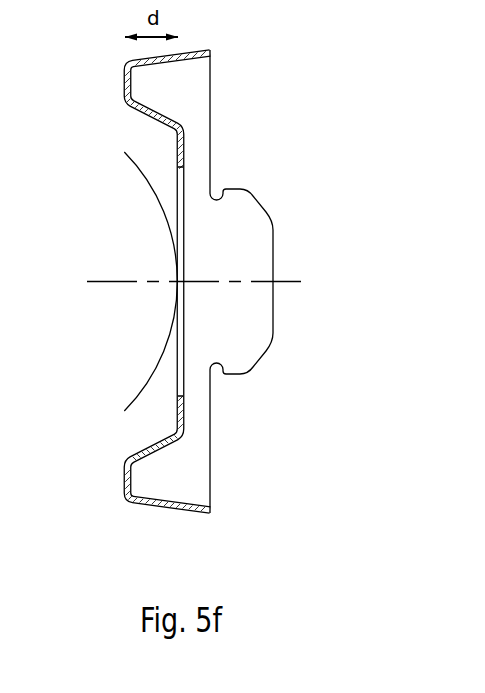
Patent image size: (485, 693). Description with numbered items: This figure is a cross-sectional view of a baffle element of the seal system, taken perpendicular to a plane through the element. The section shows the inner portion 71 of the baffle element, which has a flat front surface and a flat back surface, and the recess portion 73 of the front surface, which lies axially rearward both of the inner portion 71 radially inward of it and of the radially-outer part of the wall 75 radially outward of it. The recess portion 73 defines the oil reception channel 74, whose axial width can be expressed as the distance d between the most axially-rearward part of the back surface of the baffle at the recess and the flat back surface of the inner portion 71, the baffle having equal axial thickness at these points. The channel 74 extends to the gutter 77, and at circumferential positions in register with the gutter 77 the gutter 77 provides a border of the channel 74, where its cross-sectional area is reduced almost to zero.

The inner portion 71 is at (252, 118).
The recess portion 73 is at (103, 57).
The oil reception channel 74 is at (163, 85).
The wall 75 is at (180, 508).
The gutter 77 is at (243, 262).